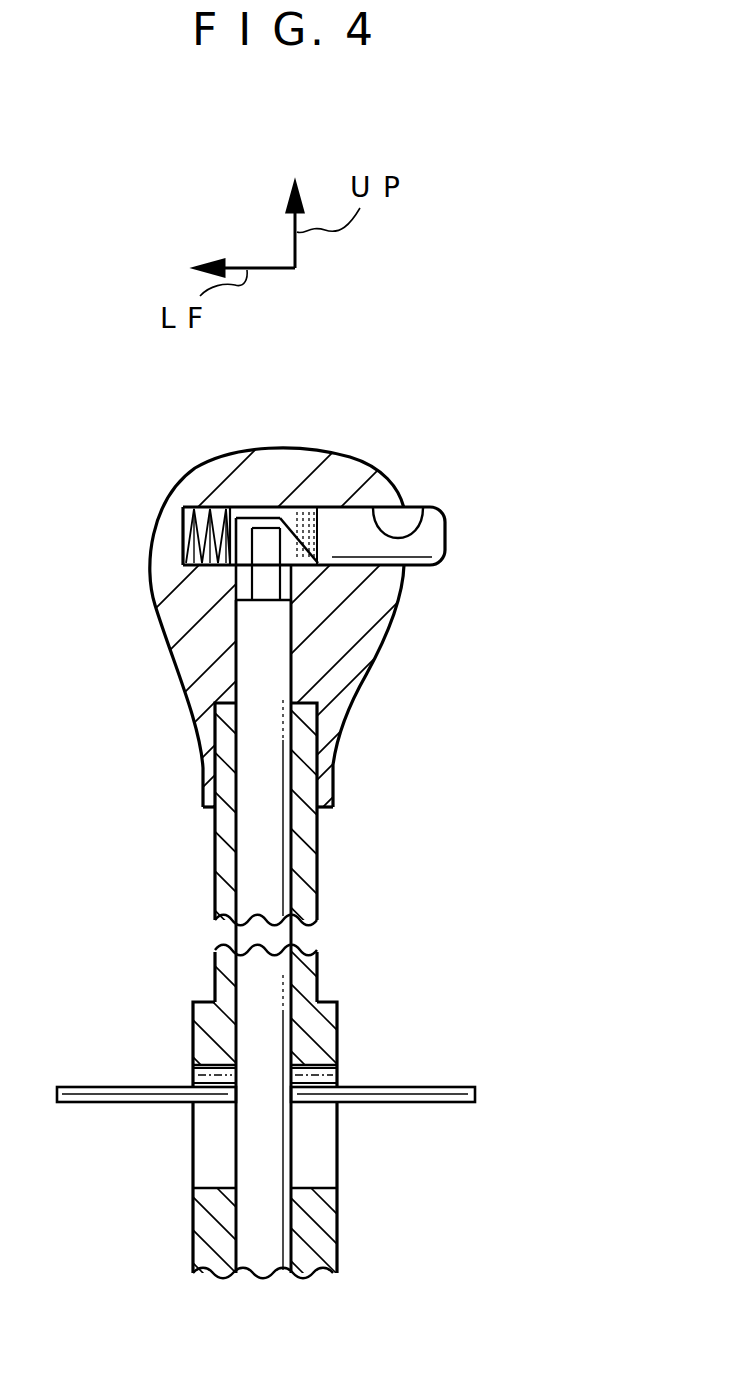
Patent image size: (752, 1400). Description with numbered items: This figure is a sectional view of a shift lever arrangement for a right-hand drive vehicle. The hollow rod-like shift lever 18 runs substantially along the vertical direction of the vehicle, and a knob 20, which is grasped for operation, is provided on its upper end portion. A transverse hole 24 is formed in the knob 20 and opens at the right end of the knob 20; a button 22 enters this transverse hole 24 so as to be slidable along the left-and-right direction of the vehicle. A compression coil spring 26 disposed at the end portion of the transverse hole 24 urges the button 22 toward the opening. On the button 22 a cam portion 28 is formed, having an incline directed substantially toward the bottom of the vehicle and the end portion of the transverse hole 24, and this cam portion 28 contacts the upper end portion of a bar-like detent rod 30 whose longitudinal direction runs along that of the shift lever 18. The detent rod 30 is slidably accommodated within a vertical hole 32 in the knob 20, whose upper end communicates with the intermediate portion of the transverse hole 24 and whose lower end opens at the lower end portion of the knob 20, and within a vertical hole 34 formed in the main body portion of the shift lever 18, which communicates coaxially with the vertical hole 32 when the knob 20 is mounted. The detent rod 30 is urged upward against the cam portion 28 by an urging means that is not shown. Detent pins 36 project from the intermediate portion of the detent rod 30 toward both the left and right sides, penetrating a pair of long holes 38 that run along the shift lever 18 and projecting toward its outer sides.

The shift lever 18 is at (310, 1058).
The knob 20 is at (388, 620).
The button 22 is at (448, 538).
The transverse hole 24 is at (415, 530).
The compression coil spring 26 is at (183, 562).
The cam portion 28 is at (278, 536).
The detent rod 30 is at (292, 890).
The vertical hole 32 is at (367, 660).
The vertical hole 34 is at (240, 852).
The detent pins 36 is at (122, 1097).
The long holes 38 is at (208, 1185).